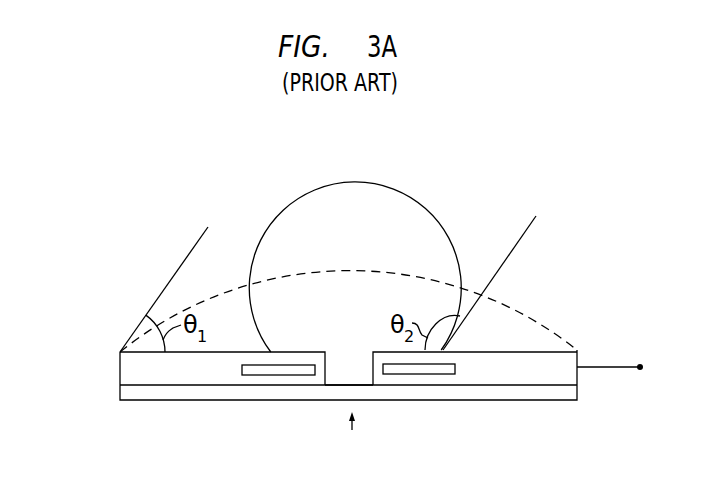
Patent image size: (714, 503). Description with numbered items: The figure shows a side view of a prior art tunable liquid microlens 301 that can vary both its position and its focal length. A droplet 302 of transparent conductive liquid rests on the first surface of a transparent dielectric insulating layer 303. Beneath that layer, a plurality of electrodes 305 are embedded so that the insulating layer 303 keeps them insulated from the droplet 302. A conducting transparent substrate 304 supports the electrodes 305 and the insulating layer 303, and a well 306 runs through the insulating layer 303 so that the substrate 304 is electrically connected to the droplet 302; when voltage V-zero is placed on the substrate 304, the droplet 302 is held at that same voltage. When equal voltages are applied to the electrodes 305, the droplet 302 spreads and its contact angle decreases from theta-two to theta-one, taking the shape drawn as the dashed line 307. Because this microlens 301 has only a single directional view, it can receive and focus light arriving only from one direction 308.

The tunable liquid microlens 301 is at (73, 213).
The droplet 302 is at (418, 200).
The dielectric insulating layer 303 is at (120, 363).
The conducting transparent substrate 304 is at (227, 400).
The electrodes 305 is at (295, 375).
The well 306 is at (352, 357).
The dashed line 307 is at (530, 311).
The direction 308 is at (352, 430).